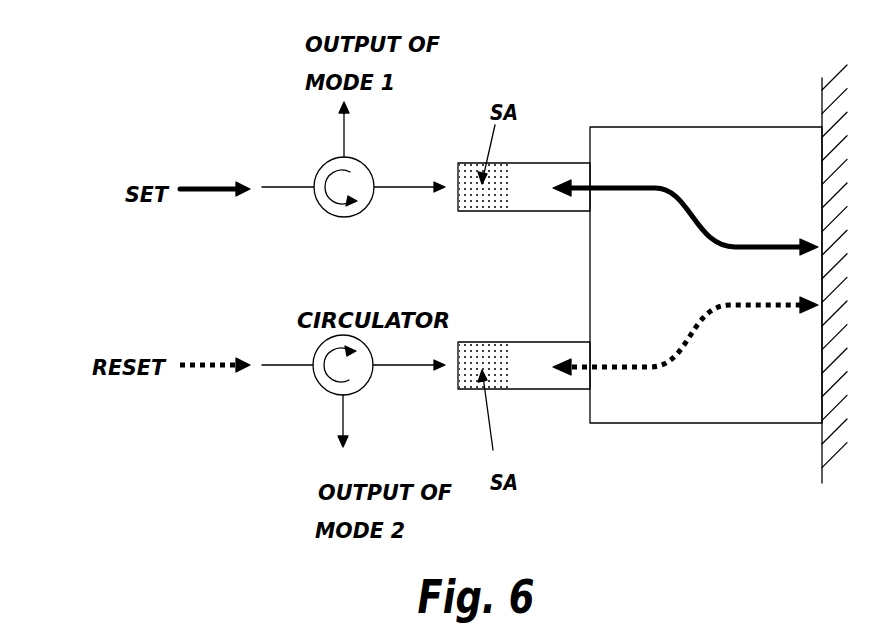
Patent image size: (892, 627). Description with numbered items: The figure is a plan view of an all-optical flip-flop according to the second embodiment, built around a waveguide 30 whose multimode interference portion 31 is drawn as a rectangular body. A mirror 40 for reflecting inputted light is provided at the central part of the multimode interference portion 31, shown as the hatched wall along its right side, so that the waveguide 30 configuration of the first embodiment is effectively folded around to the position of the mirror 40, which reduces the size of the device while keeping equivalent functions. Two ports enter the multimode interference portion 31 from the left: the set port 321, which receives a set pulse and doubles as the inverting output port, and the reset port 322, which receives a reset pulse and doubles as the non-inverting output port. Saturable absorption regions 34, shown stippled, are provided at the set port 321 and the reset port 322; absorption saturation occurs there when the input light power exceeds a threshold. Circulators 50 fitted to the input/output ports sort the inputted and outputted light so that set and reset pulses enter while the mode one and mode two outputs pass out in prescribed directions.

The waveguide 30 is at (687, 230).
The multimode interference portion 31 is at (635, 127).
The saturable absorption region 34 is at (465, 163).
The mirror 40 is at (822, 102).
The circulator 50 is at (327, 217).
The set port 321 is at (567, 163).
The reset port 322 is at (533, 340).